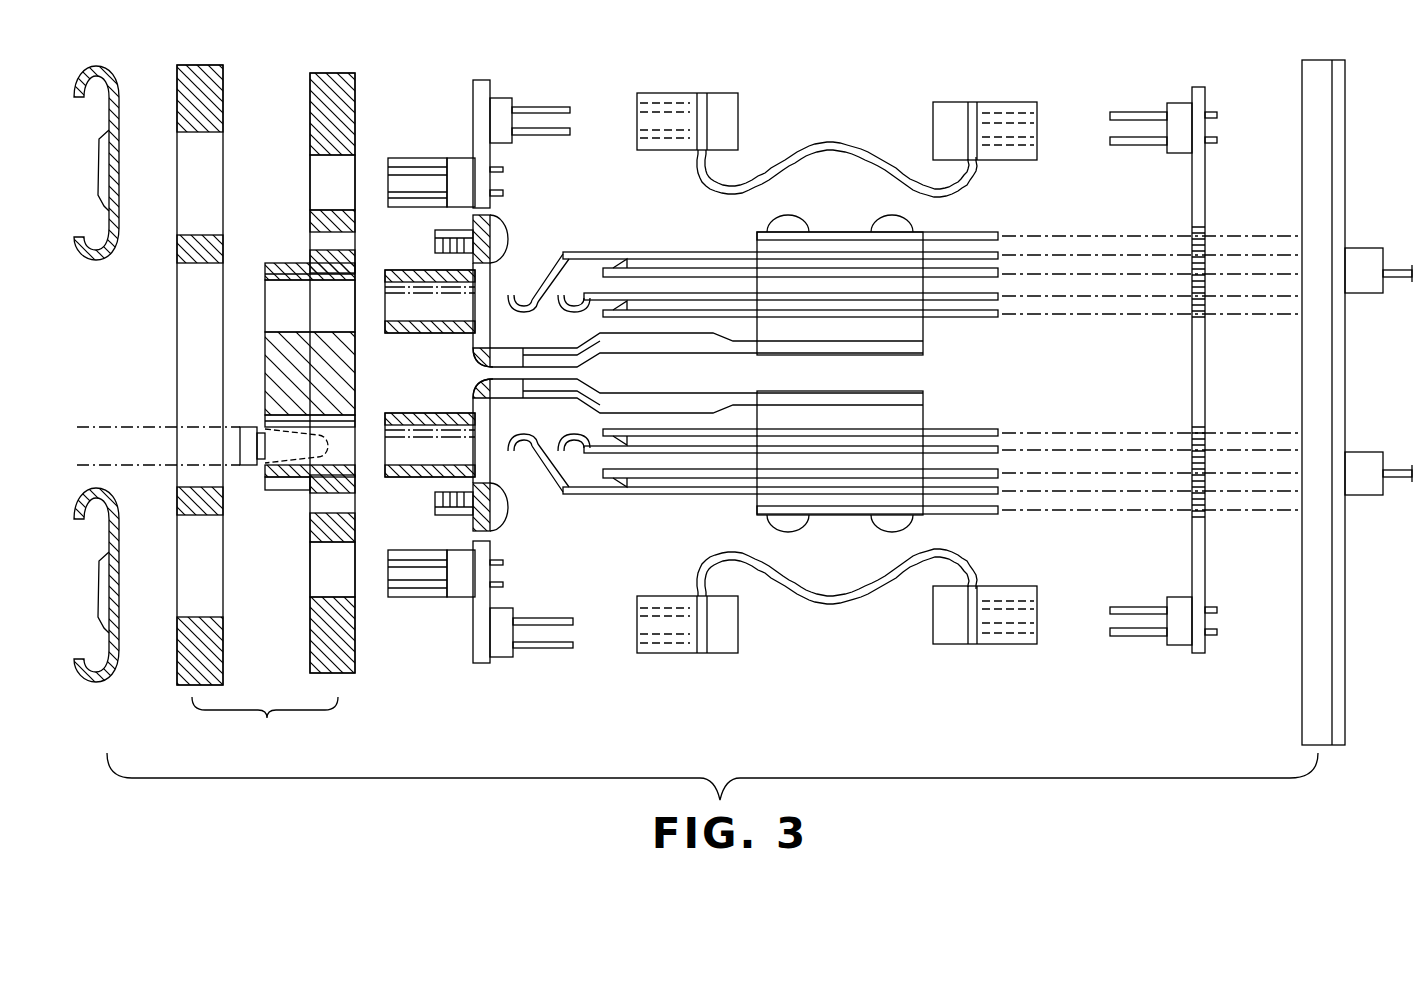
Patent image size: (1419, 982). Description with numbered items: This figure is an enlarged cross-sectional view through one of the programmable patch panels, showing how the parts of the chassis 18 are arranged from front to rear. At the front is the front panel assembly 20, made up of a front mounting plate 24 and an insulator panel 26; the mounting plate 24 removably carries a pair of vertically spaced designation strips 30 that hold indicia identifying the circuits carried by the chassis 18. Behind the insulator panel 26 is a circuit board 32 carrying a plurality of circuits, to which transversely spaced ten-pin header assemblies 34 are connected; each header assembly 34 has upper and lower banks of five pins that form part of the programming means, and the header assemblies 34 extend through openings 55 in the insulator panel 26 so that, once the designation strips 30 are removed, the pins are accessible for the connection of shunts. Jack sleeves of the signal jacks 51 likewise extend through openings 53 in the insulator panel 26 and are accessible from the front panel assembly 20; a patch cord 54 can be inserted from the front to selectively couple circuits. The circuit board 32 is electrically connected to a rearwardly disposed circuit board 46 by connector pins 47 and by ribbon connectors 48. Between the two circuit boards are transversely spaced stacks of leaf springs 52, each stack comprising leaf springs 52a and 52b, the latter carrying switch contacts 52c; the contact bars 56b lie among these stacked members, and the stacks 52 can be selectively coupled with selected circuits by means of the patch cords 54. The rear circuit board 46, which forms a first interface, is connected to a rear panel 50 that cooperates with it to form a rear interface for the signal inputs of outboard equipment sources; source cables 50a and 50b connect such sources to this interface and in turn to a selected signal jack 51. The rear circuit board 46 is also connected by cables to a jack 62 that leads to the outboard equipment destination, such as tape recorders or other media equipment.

The chassis 18 is at (485, 257).
The front panel assembly 20 is at (265, 718).
The front mounting plate 24 is at (217, 107).
The insulator panel 26 is at (360, 101).
The designation strips 30 is at (93, 259).
The circuit board 32 is at (498, 80).
The ten-pin header assemblies 34 is at (460, 157).
The circuit board 46 is at (1198, 185).
The connector pins 47 is at (558, 134).
The ribbon connectors 48 is at (835, 142).
The rear panel 50 is at (1340, 110).
The source cable 50a is at (1392, 268).
The source cable 50b is at (1392, 470).
The signal jack 51 is at (402, 278).
The stacks of leaf springs 52 is at (860, 320).
The leaf springs 52a is at (590, 292).
The leaf springs 52b is at (702, 434).
The switch contacts 52c is at (620, 306).
The openings 53 is at (280, 284).
The patch cords 54 is at (99, 426).
The openings 55 is at (333, 157).
The contact bar 56b is at (690, 313).
The jack 62 is at (413, 412).